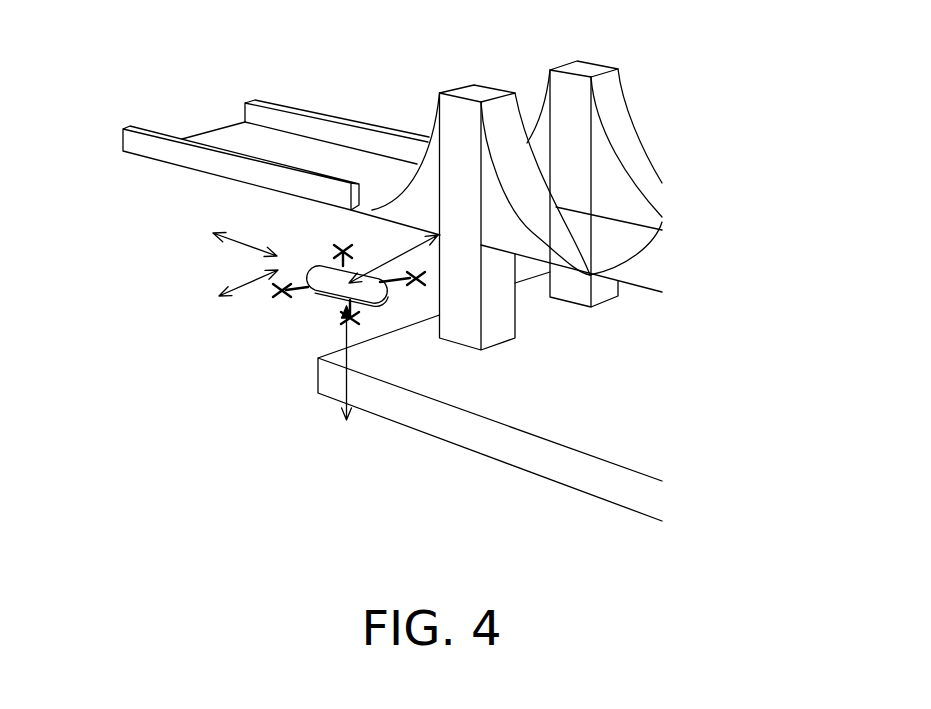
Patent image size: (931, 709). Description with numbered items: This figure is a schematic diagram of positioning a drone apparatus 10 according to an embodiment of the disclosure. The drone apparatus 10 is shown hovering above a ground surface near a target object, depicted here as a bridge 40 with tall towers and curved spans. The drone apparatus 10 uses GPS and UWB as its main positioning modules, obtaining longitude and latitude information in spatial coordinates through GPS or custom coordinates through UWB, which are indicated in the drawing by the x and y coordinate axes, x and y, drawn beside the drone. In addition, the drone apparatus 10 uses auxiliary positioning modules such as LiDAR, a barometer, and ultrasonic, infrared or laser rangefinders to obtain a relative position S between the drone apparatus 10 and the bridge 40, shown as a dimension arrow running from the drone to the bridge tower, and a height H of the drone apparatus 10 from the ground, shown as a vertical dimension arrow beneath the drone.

The drone apparatus 10 is at (317, 288).
The bridge 40 is at (590, 70).
The relative position S is at (393, 254).
The height H is at (335, 363).
The x coordinate x is at (245, 234).
The y coordinate y is at (242, 276).